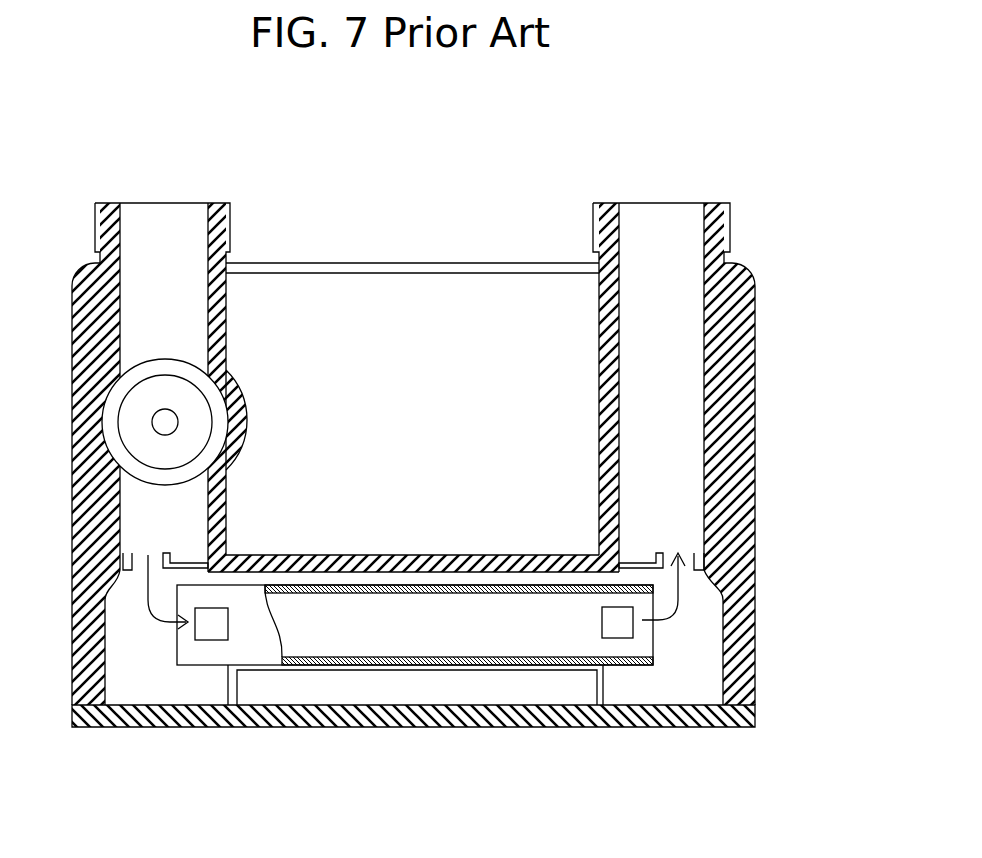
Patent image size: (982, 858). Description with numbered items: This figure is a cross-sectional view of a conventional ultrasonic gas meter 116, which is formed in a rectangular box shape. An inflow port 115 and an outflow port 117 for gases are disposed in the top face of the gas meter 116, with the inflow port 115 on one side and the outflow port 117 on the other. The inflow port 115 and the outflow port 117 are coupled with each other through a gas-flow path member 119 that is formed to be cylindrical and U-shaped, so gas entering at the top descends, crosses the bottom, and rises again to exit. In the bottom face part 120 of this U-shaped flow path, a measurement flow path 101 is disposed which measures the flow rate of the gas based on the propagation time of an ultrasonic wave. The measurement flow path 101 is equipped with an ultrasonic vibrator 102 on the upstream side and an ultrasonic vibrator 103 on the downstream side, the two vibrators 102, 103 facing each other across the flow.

The measurement flow path 101 is at (392, 645).
The ultrasonic vibrator 102 is at (210, 633).
The ultrasonic vibrator 103 is at (623, 628).
The inflow port 115 is at (163, 216).
The gas meter 116 is at (395, 257).
The outflow port 117 is at (655, 216).
The gas-flow path member 119 is at (752, 280).
The bottom face part 120 is at (587, 720).